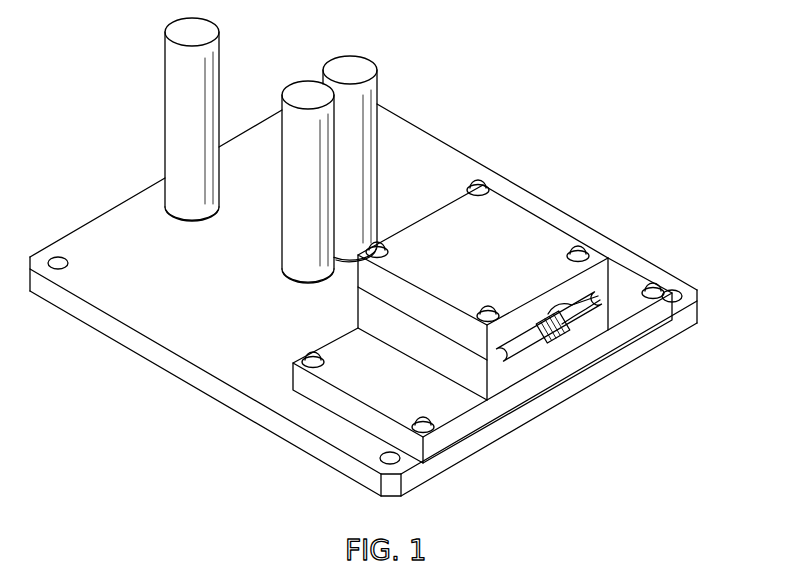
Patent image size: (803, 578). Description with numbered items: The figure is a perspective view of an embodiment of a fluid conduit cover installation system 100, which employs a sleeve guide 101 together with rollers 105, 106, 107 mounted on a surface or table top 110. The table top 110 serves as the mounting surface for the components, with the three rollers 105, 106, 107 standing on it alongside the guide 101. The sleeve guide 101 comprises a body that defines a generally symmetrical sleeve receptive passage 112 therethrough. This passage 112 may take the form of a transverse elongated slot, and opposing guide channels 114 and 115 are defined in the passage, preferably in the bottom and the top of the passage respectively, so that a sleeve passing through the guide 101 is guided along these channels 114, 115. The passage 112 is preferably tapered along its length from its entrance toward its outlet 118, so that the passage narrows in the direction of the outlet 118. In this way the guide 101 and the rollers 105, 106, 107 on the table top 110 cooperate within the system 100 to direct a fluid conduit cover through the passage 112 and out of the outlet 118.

The fluid conduit cover installation system 100 is at (705, 212).
The sleeve guide 101 is at (538, 198).
The roller 105 is at (217, 92).
The roller 106 is at (327, 87).
The roller 107 is at (368, 132).
The table top 110 is at (236, 422).
The sleeve receptive passage 112 is at (579, 322).
The guide channel 114 is at (574, 321).
The guide channel 115 is at (593, 304).
The outlet 118 is at (531, 364).